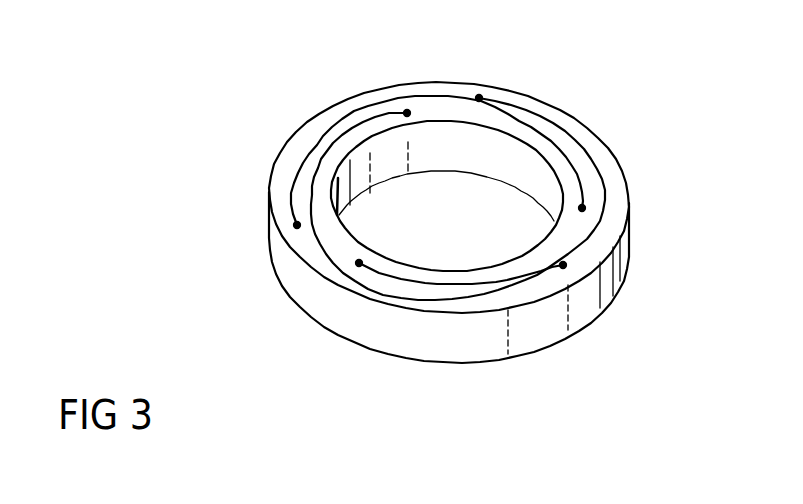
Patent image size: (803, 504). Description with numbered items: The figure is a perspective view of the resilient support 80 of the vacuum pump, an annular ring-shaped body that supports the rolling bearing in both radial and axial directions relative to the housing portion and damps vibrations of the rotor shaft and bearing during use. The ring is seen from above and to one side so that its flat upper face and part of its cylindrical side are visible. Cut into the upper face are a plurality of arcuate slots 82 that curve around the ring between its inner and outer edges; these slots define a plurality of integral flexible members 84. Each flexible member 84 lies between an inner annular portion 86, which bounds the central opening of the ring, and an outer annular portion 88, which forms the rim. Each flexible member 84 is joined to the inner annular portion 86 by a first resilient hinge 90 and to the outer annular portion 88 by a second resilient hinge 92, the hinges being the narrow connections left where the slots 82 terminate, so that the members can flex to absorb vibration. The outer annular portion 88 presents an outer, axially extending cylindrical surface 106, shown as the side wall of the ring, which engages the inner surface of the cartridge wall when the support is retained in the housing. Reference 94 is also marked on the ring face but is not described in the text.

The resilient support 80 is at (467, 197).
The arcuate slots 82 is at (547, 116).
The flexible members 84 is at (301, 196).
The inner annular portion 86 is at (337, 155).
The outer annular portion 88 is at (438, 84).
The first resilient hinge 90 is at (413, 105).
The second resilient hinge 92 is at (307, 228).
The inner wall 94 is at (455, 138).
The outer axially extending cylindrical surface 106 is at (313, 313).